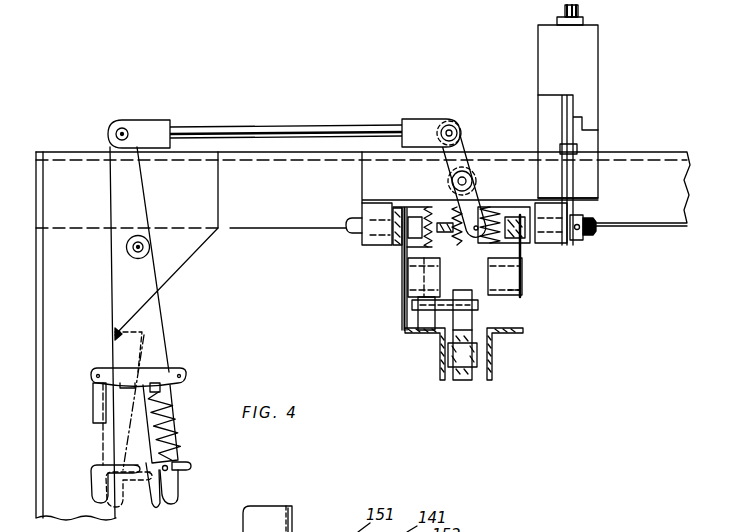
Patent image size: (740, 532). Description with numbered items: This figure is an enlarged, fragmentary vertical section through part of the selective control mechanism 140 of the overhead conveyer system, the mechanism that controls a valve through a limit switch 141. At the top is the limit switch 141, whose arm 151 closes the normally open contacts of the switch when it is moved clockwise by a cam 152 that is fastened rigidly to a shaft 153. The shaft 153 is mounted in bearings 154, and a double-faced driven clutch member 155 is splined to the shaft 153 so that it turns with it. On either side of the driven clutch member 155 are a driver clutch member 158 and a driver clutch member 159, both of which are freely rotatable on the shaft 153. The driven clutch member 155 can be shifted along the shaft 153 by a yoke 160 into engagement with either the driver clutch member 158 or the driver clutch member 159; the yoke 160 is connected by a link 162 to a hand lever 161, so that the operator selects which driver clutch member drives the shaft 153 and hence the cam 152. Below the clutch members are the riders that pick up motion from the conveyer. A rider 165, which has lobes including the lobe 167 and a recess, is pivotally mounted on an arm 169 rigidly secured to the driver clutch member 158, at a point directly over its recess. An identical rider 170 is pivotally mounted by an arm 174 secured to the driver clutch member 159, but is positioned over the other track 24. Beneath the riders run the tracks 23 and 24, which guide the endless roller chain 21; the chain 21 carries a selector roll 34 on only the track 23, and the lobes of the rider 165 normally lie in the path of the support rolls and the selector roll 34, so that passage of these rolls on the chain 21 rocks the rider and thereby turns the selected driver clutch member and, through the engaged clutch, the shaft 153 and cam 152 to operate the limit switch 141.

The selective control mechanism 140 is at (503, 82).
The limit switch 141 is at (590, 53).
The arm 151 is at (568, 118).
The cam 152 is at (570, 181).
The shaft 153 is at (592, 222).
The bearings 154 is at (555, 240).
The double-faced driven clutch member 155 is at (460, 219).
The driver clutch member 158 is at (413, 217).
The driver clutch member 159 is at (523, 252).
The yoke 160 is at (456, 148).
The hand lever 161 is at (152, 317).
The link 162 is at (271, 130).
The rider 165 is at (413, 281).
The lobe 167 is at (413, 301).
The arm 169 is at (402, 252).
The rider 170 is at (508, 290).
The arm 174 is at (522, 282).
The selector roll 34 is at (422, 318).
The track 23 is at (437, 355).
The track 24 is at (498, 350).
The endless roller chain 21 is at (458, 356).